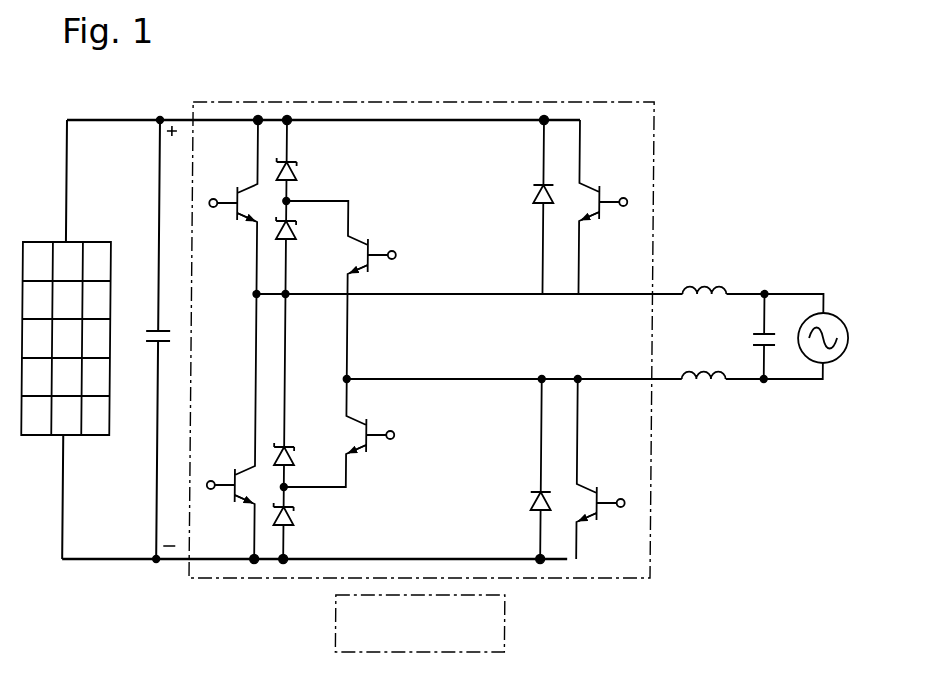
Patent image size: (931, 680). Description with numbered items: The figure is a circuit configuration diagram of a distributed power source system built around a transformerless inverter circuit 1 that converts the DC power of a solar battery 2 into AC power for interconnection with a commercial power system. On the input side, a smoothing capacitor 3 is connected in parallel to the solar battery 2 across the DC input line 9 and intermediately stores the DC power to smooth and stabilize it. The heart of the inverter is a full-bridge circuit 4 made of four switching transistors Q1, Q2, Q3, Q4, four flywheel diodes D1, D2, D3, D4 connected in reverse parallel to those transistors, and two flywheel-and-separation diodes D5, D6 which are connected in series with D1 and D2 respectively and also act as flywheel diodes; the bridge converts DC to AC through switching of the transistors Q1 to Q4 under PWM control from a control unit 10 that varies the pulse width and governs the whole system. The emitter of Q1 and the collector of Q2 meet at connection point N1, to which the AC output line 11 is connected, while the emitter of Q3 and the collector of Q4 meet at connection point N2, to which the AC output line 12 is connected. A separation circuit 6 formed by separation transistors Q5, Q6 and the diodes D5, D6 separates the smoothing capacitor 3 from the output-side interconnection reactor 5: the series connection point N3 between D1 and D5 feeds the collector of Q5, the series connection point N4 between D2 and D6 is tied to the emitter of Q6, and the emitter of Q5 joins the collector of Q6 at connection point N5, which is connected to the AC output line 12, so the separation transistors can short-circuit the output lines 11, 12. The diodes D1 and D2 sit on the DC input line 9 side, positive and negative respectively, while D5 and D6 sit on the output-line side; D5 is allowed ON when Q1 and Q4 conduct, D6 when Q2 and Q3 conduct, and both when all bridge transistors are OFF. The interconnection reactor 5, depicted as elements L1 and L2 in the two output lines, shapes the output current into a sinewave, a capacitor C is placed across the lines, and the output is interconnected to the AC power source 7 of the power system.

The inverter circuit 1 is at (556, 103).
The solar battery 2 is at (42, 241).
The smoothing capacitor 3 is at (152, 325).
The bridge circuit 4 is at (432, 111).
The interconnection reactor 5 is at (728, 325).
The separation circuit 6 is at (367, 332).
The AC power source 7 is at (841, 316).
The DC input line 9 is at (184, 118).
The control unit 10 is at (509, 629).
The AC output line 11 is at (467, 293).
The AC output line 12 is at (463, 377).
The switching element Q1 is at (233, 207).
The switching element Q2 is at (231, 426).
The switching element Q3 is at (603, 207).
The switching element Q4 is at (601, 469).
The separation switching element Q5 is at (341, 290).
The separation switching element Q6 is at (339, 433).
The flywheel diode D1 is at (306, 160).
The flywheel diode D2 is at (303, 523).
The flywheel diode D3 is at (524, 207).
The flywheel diode D4 is at (522, 469).
The flywheel-and-separation diode D5 is at (304, 247).
The flywheel-and-separation diode D6 is at (304, 390).
The connection point N1 is at (254, 292).
The connection point N2 is at (577, 394).
The series connection point N3 is at (290, 200).
The series connection point N4 is at (290, 486).
The connection point N5 is at (329, 380).
The first inductor L1 is at (723, 277).
The second inductor L2 is at (722, 394).
The capacitor C is at (755, 337).